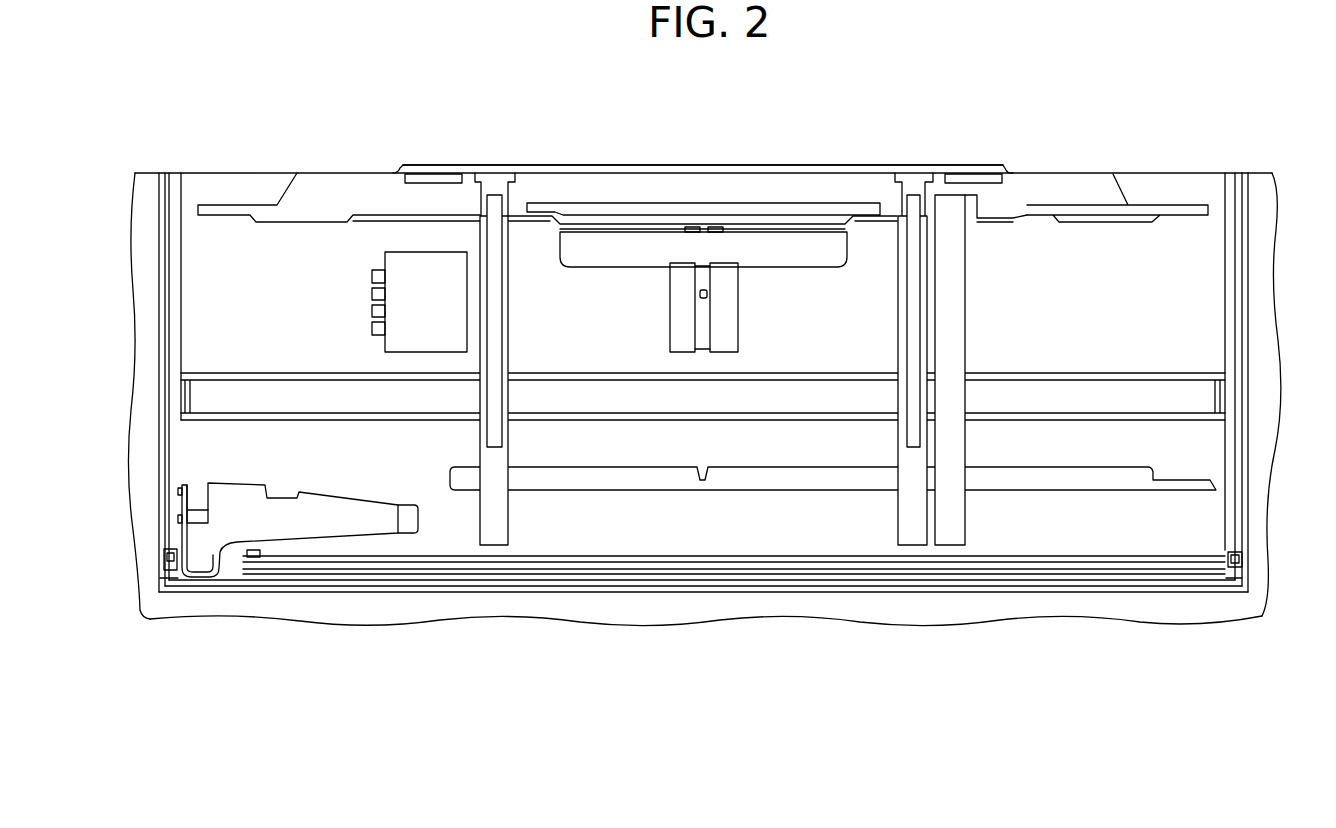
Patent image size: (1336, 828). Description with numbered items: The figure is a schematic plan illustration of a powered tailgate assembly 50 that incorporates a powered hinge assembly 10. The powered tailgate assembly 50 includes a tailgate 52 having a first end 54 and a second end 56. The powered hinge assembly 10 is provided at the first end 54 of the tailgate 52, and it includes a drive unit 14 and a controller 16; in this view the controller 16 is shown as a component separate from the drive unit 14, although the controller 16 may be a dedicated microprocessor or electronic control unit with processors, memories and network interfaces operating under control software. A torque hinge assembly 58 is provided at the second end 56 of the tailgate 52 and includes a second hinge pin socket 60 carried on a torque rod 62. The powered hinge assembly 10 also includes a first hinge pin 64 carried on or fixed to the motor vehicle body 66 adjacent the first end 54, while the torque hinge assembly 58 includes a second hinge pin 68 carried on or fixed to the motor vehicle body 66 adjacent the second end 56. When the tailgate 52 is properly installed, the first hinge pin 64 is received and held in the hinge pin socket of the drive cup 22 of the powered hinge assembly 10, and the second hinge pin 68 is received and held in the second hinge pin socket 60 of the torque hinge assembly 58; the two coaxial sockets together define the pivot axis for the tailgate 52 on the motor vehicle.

The powered hinge assembly 10 is at (144, 619).
The drive unit 14 is at (323, 500).
The controller 16 is at (400, 293).
The drive cup 22 is at (178, 553).
The powered tailgate assembly 50 is at (1106, 127).
The tailgate 52 is at (1080, 308).
The first end 54 is at (166, 357).
The second end 56 is at (1243, 323).
The torque hinge assembly 58 is at (1274, 621).
The second hinge pin socket 60 is at (1233, 567).
The torque rod 62 is at (627, 558).
The first hinge pin 64 is at (170, 587).
The motor vehicle body 66 is at (160, 462).
The second hinge pin 68 is at (1232, 597).